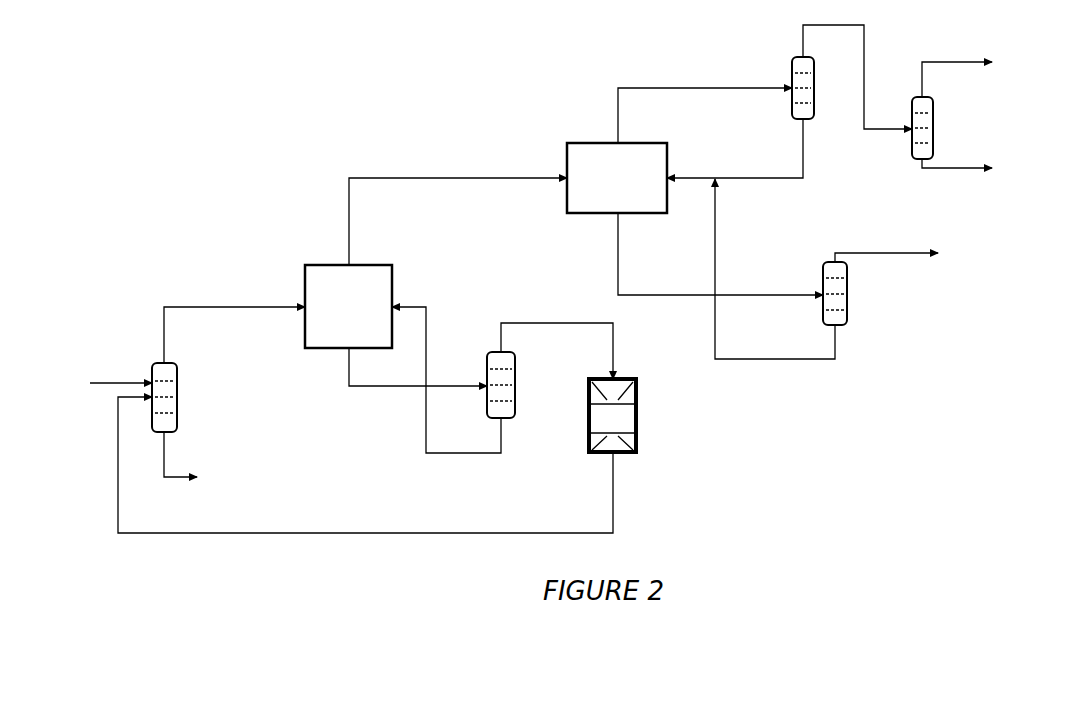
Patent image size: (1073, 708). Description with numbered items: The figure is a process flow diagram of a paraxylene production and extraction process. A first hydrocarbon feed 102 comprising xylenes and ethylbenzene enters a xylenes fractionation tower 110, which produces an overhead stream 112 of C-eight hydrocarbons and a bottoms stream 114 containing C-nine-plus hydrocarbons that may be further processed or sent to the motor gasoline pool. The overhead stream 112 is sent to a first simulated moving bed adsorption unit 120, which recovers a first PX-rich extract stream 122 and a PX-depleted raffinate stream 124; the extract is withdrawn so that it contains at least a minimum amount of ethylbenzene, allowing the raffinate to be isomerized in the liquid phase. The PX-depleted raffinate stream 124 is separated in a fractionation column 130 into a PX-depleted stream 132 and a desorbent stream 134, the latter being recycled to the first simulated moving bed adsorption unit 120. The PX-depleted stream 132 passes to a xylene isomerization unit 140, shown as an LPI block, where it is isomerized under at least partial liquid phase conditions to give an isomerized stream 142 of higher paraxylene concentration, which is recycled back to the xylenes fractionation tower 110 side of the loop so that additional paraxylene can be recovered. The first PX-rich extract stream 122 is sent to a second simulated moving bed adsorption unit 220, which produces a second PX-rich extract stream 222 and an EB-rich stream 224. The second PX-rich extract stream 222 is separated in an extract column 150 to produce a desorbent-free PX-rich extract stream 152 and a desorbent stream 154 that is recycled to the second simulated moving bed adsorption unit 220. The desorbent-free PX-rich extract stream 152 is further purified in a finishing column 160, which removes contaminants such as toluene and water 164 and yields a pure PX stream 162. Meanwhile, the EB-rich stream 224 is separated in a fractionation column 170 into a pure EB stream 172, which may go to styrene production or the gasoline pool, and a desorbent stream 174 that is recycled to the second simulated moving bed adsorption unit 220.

The first hydrocarbon feed 102 is at (121, 373).
The xylenes fractionation tower 110 is at (219, 395).
The overhead stream 112 is at (216, 330).
The bottoms stream 114 is at (172, 466).
The first simulated moving bed adsorption unit 120 is at (365, 301).
The first PX-rich extract stream 122 is at (439, 221).
The PX-depleted raffinate stream 124 is at (418, 382).
The fractionation column 130 is at (553, 395).
The PX-depleted stream 132 is at (557, 340).
The desorbent stream 134 is at (446, 380).
The xylene isomerization unit 140 is at (674, 428).
The isomerized stream 142 is at (365, 465).
The extract column 150 is at (852, 97).
The desorbent-free PX-rich extract stream 152 is at (857, 67).
The desorbent stream 154 is at (753, 148).
The finishing column 160 is at (977, 134).
The pure PX stream 162 is at (982, 169).
The toluene and water 164 is at (982, 74).
The fractionation column 170 is at (887, 303).
The pure EB stream 172 is at (912, 251).
The desorbent stream 174 is at (775, 269).
The second simulated moving bed adsorption unit 220 is at (634, 173).
The second PX-rich extract stream 222 is at (705, 115).
The EB-rich stream 224 is at (720, 254).